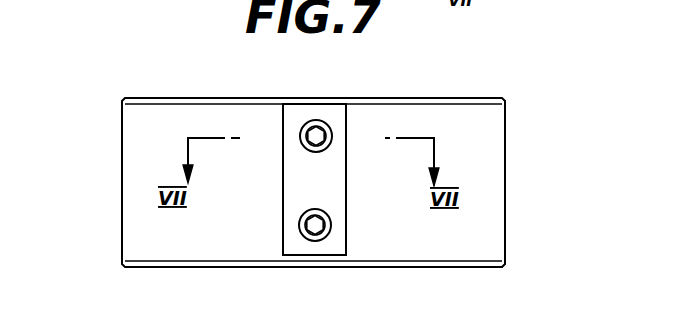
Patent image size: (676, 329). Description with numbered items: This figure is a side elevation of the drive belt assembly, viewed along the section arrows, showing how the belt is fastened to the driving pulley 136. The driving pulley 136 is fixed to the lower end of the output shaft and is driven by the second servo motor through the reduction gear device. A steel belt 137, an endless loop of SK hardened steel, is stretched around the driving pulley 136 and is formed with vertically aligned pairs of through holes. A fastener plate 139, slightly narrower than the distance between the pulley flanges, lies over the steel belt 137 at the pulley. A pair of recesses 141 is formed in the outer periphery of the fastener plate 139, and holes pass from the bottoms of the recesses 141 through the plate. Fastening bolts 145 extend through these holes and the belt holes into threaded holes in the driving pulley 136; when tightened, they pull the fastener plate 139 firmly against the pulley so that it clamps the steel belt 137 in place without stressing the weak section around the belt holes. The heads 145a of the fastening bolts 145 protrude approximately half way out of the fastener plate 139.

The driving pulley 136 is at (478, 98).
The steel belt 137 is at (490, 193).
The fastener plate 139 is at (290, 108).
The recesses 141 is at (303, 149).
The fastening bolts 145 is at (323, 121).
The heads of the fastener bolts 145a is at (328, 148).